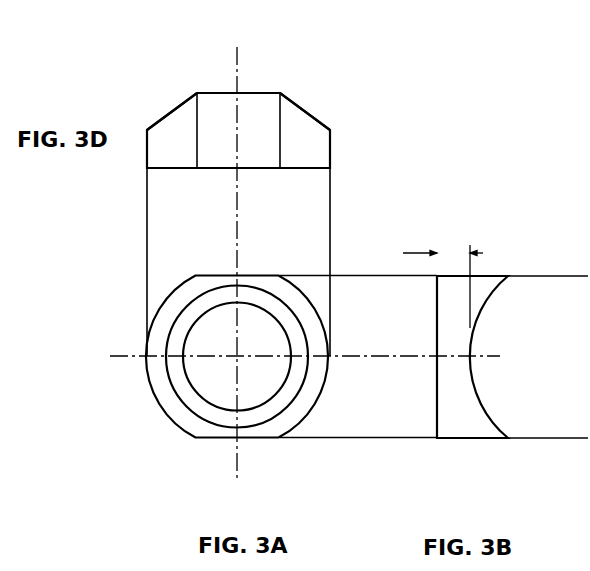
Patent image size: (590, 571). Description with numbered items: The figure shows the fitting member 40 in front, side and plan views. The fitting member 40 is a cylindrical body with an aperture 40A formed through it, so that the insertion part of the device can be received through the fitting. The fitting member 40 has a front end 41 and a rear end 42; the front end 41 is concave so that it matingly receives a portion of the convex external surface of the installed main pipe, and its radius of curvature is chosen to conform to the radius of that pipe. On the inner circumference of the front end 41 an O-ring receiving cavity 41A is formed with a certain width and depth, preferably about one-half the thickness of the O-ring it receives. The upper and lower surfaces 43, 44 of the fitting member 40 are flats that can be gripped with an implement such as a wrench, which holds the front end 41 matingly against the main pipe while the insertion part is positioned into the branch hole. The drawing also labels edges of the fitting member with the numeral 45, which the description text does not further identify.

In FIG. 3D, the fitting member 40 is at (501, 150).
In FIG. 3A, the aperture 40A is at (218, 395).
In FIG. 3D, the front end 41 is at (258, 78).
In FIG. 3B, the front end 41 is at (512, 366).
In FIG. 3A, the O-ring receiving cavity 41A is at (180, 390).
In FIG. 3D, the rear end 42 is at (198, 174).
In FIG. 3B, the rear end 42 is at (422, 367).
In FIG. 3D, the upper surface 43 is at (262, 160).
In FIG. 3B, the upper surface 43 is at (500, 278).
In FIG. 3A, the lower surface 44 is at (260, 440).
In FIG. 3B, the lower surface 44 is at (462, 441).
In FIG. 3D, the chamfered edge 45 is at (318, 151).
In FIG. 3A, the chamfered edge 45 is at (148, 340).
In FIG. 3B, the chamfered edge 45 is at (478, 412).